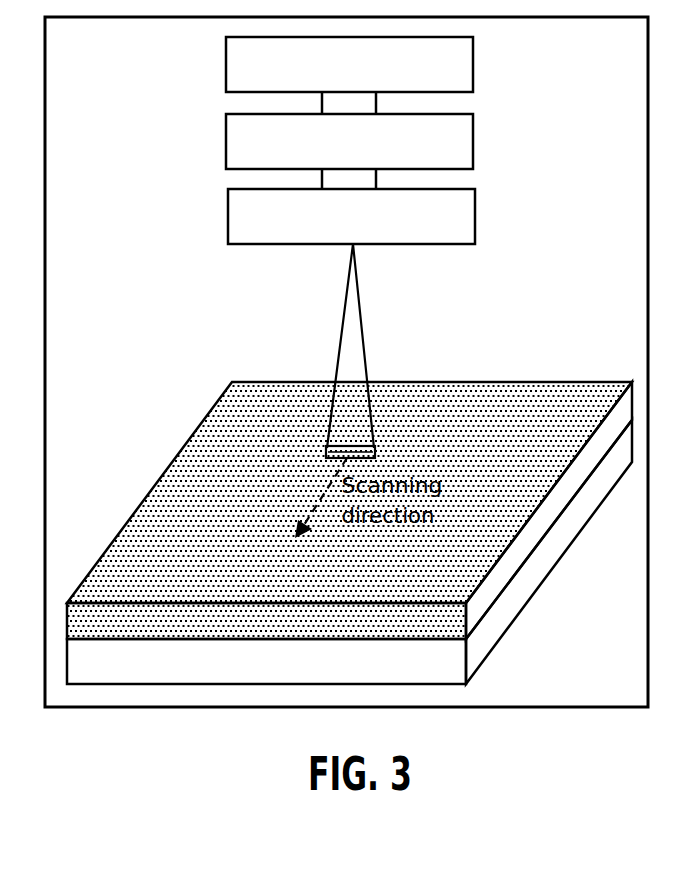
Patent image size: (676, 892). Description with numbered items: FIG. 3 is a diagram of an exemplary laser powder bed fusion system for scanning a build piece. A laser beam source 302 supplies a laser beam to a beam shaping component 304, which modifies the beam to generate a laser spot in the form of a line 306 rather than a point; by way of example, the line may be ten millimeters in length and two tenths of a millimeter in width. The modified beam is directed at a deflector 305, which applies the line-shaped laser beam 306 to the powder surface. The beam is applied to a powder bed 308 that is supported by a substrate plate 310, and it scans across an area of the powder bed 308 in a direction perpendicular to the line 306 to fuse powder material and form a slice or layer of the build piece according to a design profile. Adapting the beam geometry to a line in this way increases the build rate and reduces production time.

The laser beam source 302 is at (226, 63).
The beam shaping component 304 is at (226, 138).
The deflector 305 is at (228, 218).
The line 306 is at (374, 446).
The powder bed 308 is at (240, 381).
The substrate plate 310 is at (349, 552).